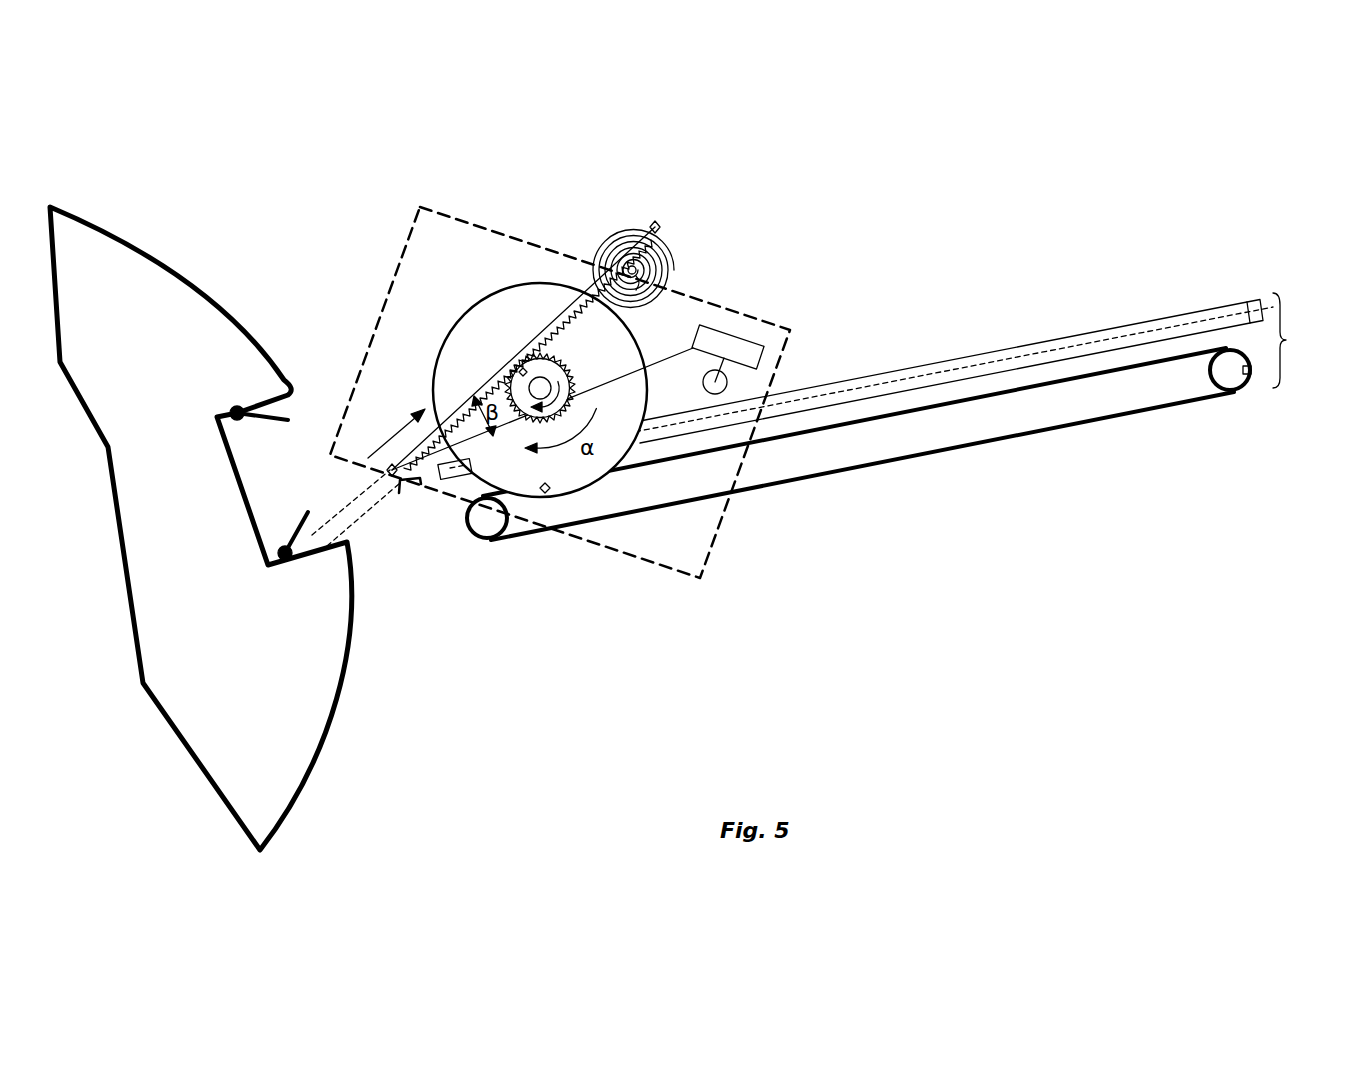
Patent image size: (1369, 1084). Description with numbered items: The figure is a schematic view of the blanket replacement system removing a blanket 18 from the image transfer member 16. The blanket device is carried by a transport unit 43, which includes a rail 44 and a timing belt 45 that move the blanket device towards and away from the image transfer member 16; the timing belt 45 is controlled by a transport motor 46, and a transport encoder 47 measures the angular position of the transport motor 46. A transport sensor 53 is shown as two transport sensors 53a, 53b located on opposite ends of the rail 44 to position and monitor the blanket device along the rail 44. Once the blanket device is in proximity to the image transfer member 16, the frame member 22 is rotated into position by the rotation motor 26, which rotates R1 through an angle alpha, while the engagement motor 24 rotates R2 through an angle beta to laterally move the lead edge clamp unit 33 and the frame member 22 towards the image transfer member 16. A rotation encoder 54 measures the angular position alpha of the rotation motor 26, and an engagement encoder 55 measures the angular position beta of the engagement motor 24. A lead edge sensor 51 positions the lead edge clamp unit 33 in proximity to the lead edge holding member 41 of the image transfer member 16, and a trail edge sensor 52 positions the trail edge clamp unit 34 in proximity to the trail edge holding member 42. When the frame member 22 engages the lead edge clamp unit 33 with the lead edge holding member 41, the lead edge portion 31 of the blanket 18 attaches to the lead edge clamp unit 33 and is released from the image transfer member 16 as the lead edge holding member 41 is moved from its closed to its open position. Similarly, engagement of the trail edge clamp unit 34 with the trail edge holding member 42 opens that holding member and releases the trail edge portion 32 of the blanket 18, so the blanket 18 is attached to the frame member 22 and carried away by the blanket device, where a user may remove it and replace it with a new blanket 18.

The image transfer member 16 is at (192, 540).
The lead edge holding member 41 is at (275, 410).
The trail edge holding member 42 is at (310, 520).
The timing belt 45 is at (1083, 427).
The frame member 22 is at (505, 533).
The transport motor 46 is at (1232, 382).
The transport encoder 47 is at (1253, 372).
The transport sensor 53 is at (1253, 307).
The transport sensor 53a is at (1250, 303).
The transport sensor 53b is at (447, 478).
The rail 44 is at (1000, 352).
The transport unit 43 is at (1286, 340).
The rotation motor 26 is at (567, 472).
The rotation encoder 54 is at (545, 490).
The engagement motor 24 is at (597, 388).
The lead edge portion 31 is at (647, 263).
The lead edge clamp unit 33 is at (653, 287).
The trail edge sensor 52 is at (387, 470).
The trail edge portion 32 is at (397, 477).
The trail edge clamp unit 34 is at (403, 487).
The engagement encoder 55 is at (527, 345).
The lead edge sensor 51 is at (637, 228).
The blanket 18 is at (667, 243).
The rotation of rotation motor R1 is at (612, 408).
The rotation of engagement motor R2 is at (560, 378).